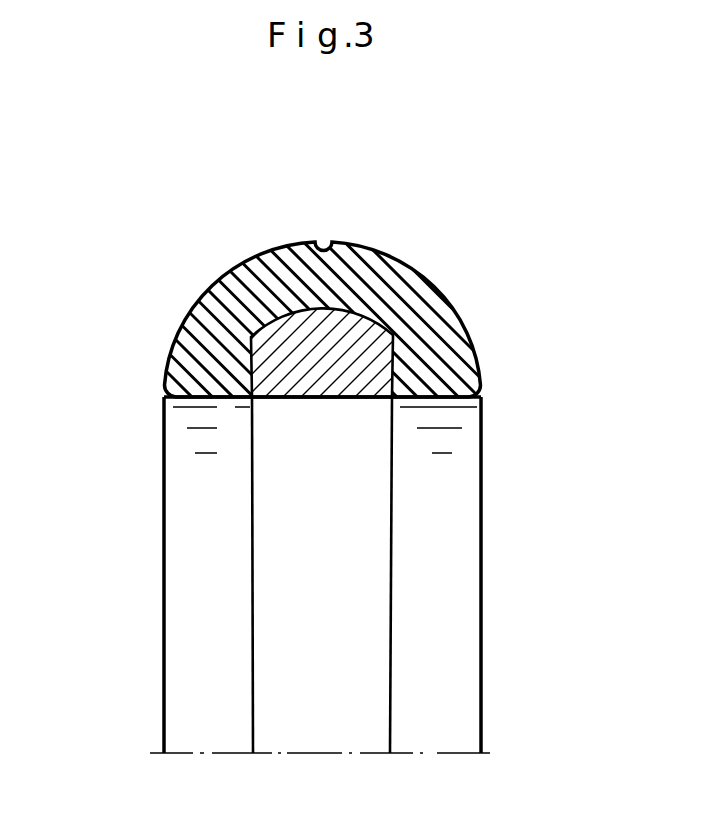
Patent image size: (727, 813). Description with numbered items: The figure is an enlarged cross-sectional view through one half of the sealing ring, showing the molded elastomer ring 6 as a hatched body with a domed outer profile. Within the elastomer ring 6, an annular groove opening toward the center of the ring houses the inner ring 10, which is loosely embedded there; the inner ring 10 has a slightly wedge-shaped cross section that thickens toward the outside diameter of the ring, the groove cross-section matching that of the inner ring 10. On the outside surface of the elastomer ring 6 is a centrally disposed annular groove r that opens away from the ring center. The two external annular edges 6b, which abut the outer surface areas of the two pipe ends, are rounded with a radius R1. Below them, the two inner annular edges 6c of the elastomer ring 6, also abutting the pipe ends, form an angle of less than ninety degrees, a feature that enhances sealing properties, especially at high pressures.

The molded elastomer ring 6 is at (447, 333).
The inner ring 10 is at (357, 345).
The external annular edges 6b is at (164, 577).
The inner annular edges 6c is at (252, 707).
The radius R1 is at (165, 389).
The centrally disposed annular groove r is at (320, 247).